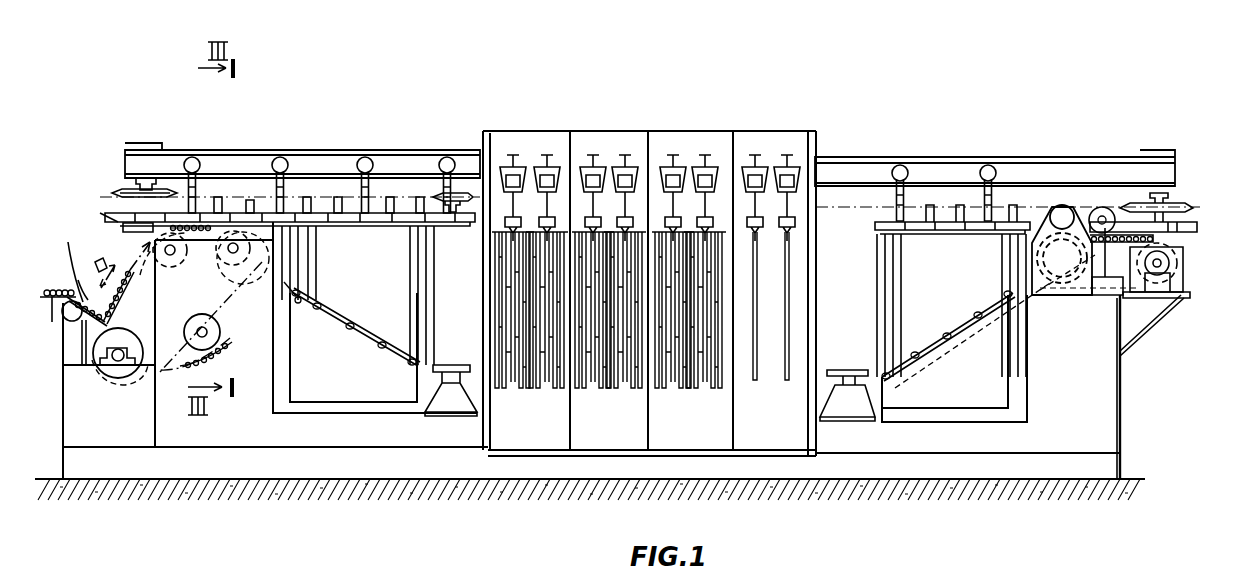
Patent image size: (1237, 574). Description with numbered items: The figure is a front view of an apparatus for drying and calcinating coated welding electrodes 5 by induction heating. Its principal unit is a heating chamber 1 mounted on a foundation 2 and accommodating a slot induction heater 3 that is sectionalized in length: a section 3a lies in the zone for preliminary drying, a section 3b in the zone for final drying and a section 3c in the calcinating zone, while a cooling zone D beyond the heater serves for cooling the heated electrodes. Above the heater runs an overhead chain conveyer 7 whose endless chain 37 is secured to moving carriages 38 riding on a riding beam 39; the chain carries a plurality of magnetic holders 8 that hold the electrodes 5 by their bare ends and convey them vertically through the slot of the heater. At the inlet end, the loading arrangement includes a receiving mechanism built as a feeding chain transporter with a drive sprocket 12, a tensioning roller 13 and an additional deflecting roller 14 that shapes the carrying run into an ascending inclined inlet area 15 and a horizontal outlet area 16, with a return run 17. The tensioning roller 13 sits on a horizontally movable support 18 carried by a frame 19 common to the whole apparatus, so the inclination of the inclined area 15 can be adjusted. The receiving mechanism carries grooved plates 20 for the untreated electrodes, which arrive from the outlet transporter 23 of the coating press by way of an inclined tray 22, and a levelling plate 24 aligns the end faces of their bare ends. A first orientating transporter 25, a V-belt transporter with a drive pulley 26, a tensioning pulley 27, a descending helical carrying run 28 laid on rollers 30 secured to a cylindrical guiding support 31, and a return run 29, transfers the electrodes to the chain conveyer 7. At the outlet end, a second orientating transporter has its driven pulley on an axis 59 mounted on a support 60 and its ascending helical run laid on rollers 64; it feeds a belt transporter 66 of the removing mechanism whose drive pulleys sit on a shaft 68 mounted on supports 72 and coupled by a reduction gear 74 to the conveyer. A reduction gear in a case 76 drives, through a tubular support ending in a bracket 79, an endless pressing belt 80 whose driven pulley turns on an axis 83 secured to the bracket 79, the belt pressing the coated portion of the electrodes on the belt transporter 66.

The heating chamber 1 is at (491, 452).
The foundation 2 is at (338, 500).
The slot induction heater 3 is at (609, 301).
The section 3a is at (546, 399).
The section 3b is at (596, 399).
The section 3c is at (703, 400).
The cooling zone D is at (810, 428).
The coated welding electrodes 5 is at (80, 290).
The overhead chain conveyer 7 is at (386, 191).
The magnetic holders 8 is at (387, 243).
The drive sprocket 12 is at (228, 332).
The tensioning roller 13 is at (138, 342).
The additional deflecting roller 14 is at (218, 302).
The inclined inlet area 15 is at (120, 262).
The horizontal outlet area 16 is at (220, 244).
The return run 17 is at (226, 343).
The support 18 is at (122, 370).
The frame 19 is at (88, 440).
The plates 20 is at (118, 300).
The inclined tray 22 is at (52, 292).
The outlet transporter 23 is at (57, 316).
The levelling plate 24 is at (120, 215).
The first orientating transporter 25 is at (368, 360).
The drive pulley 26 is at (430, 378).
The tensioning pulley 27 is at (241, 275).
The carrying run 28 is at (342, 309).
The return run 29 is at (298, 304).
The rollers 30 is at (348, 332).
The guiding support 31 is at (365, 412).
The endless chain 37 is at (330, 195).
The moving carriages 38 is at (291, 155).
The riding beam 39 is at (222, 160).
The axis 59 is at (815, 400).
The support 60 is at (860, 400).
The rollers 64 is at (978, 322).
The belt transporter 66 is at (1120, 312).
The shaft 68 is at (1162, 320).
The supports 72 is at (1180, 262).
The reduction gear 74 is at (1178, 300).
The case 76 is at (1058, 210).
The bracket 79 is at (1106, 207).
The pressing belt 80 is at (1098, 215).
The axis 83 is at (1106, 296).